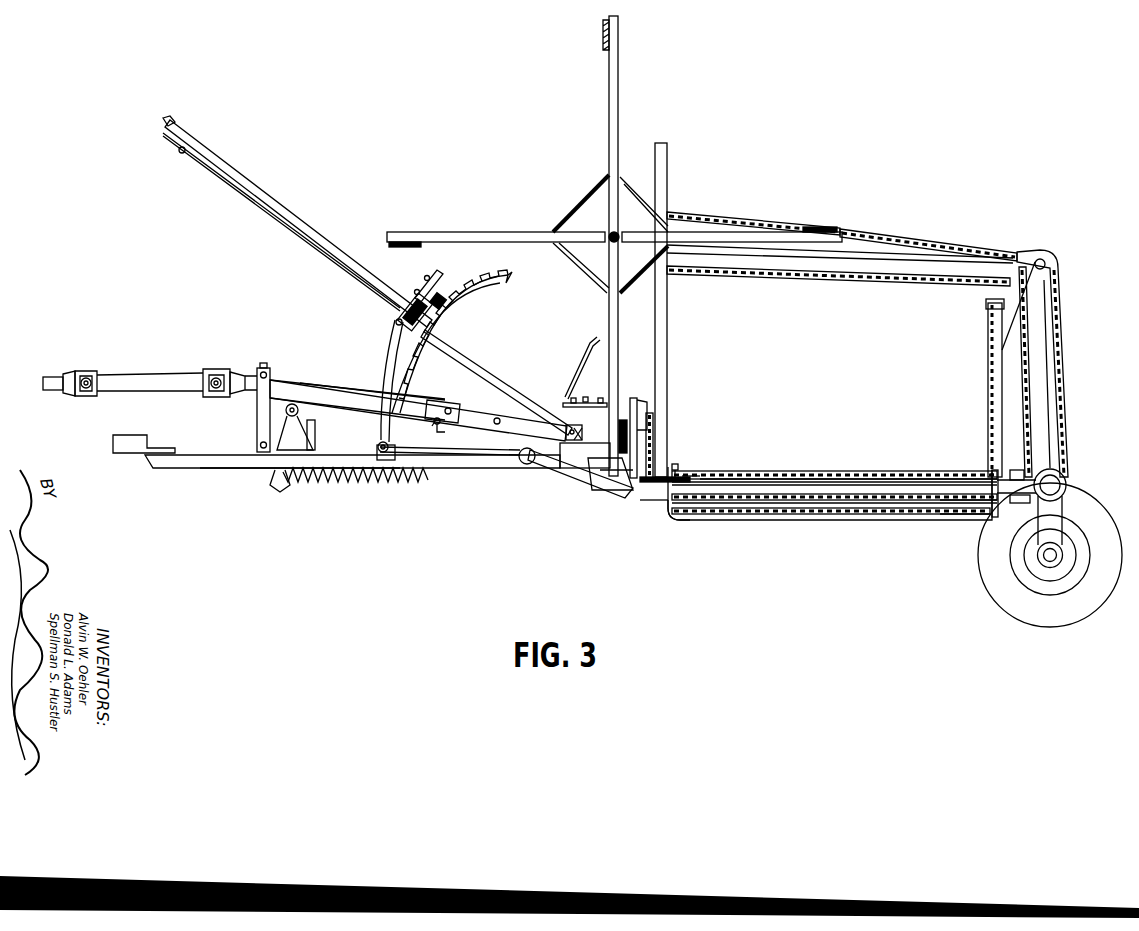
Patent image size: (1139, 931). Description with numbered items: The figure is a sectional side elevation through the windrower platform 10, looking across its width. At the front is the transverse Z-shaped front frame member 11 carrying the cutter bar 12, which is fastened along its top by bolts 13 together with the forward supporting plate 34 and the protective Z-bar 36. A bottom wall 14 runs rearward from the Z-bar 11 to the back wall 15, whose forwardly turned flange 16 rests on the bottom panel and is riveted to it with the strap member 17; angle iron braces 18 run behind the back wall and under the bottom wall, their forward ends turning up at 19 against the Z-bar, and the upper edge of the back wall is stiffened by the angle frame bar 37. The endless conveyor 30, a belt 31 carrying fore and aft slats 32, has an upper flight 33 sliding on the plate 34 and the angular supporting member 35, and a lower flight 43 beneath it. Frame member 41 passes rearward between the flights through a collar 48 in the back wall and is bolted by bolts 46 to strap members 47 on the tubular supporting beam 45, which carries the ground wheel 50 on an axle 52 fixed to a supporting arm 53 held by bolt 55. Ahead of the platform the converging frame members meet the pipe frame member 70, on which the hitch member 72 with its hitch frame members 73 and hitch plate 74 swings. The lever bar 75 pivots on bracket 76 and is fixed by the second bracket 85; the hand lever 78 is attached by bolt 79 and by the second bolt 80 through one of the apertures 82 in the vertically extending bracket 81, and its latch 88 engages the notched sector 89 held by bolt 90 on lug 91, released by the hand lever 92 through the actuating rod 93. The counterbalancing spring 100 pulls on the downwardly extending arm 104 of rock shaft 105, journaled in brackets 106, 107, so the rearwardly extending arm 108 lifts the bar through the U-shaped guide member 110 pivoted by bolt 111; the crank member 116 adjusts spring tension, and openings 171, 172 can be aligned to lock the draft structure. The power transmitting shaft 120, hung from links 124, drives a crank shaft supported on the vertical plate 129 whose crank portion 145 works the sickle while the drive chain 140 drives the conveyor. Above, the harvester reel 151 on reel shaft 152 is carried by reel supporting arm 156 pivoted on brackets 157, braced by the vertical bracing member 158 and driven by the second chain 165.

The platform 10 is at (707, 536).
The Z-shaped front frame member 11 is at (663, 502).
The cutter bar 12 is at (626, 498).
The bolts 13 is at (686, 476).
The bottom wall 14 is at (805, 518).
The back wall 15 is at (988, 375).
The forwardly turned flange 16 is at (967, 515).
The strap member 17 is at (963, 510).
The angle iron braces 18 is at (1000, 420).
The upturned brace ends 19 is at (668, 512).
The endless conveyor 30 is at (838, 463).
The belt 31 is at (760, 485).
The slats 32 is at (722, 470).
The upper flight 33 is at (870, 472).
The forward supporting plate 34 is at (690, 474).
The angular supporting member 35 is at (990, 470).
The Z-bar 36 is at (679, 464).
The angle frame bar 37 is at (986, 306).
The frame member 41 is at (560, 470).
The lower flight 43 is at (887, 511).
The tubular supporting beam 45 is at (1012, 505).
The bolts 46 is at (1017, 470).
The strap members 47 is at (1066, 483).
The collars 48 is at (990, 523).
The ground engaging wheel 50 is at (1093, 606).
The axle 52 is at (1058, 553).
The supporting arm 53 is at (1063, 522).
The bolt 55 is at (1052, 463).
The pipe frame member 70 is at (524, 465).
The hitch member 72 is at (152, 477).
The hitch frame members 73 is at (215, 470).
The hitch plate 74 is at (128, 435).
The bar 75 is at (416, 392).
The bracket 76 is at (605, 480).
The hand lever 78 is at (298, 222).
The bolt 79 is at (587, 436).
The second bolt 80 is at (395, 318).
The vertically extending bracket 81 is at (435, 272).
The apertures 82 is at (416, 290).
The second bracket 85 is at (555, 415).
The latch 88 is at (438, 300).
The notched sector 89 is at (505, 283).
The bolt 90 is at (388, 462).
The lug 91 is at (390, 446).
The hand lever 92 is at (167, 140).
The actuating rod 93 is at (202, 167).
The counterbalancing spring 100 is at (325, 482).
The downwardly extending arm 104 is at (280, 490).
The rock shaft 105 is at (296, 405).
The bracket 106 is at (300, 440).
The bracket 107 is at (316, 448).
The rearwardly extending arm 108 is at (347, 407).
The U-shaped guide member 110 is at (455, 430).
The bolt 111 is at (432, 428).
The crank member 116 is at (575, 372).
The power transmitting shaft 120 is at (285, 378).
The links 124 is at (257, 416).
The vertical plate 129 is at (585, 456).
The drive chain 140 is at (656, 430).
The crank portion 145 is at (636, 398).
The harvester reel 151 is at (618, 96).
The reel shaft 152 is at (610, 236).
The reel supporting arm 156 is at (895, 252).
The brackets 157 is at (1052, 298).
The vertical bracing member 158 is at (667, 150).
The second chain 165 is at (705, 215).
The opening 171 is at (450, 405).
The opening 172 is at (495, 426).